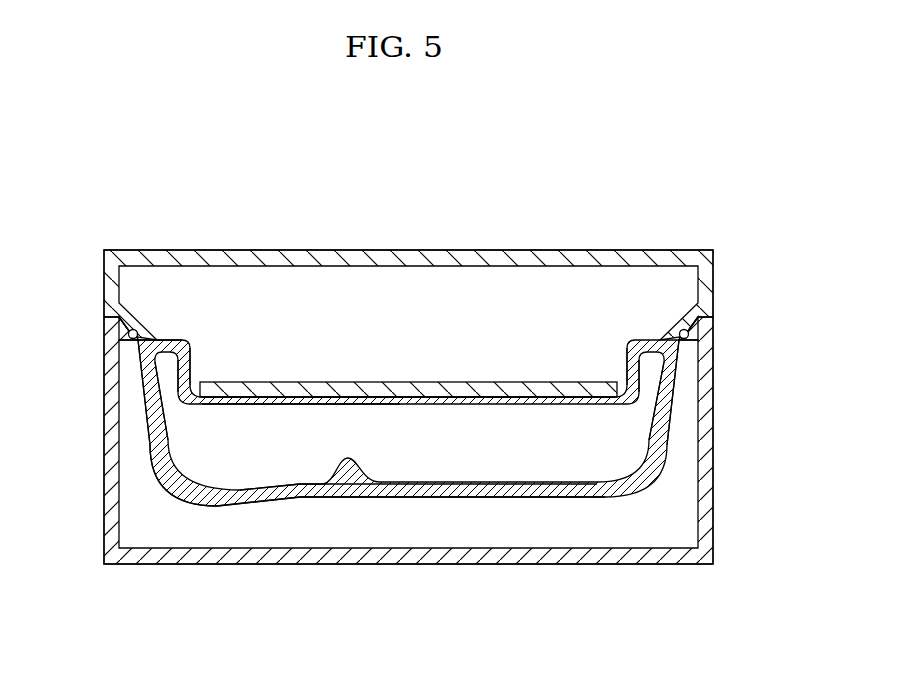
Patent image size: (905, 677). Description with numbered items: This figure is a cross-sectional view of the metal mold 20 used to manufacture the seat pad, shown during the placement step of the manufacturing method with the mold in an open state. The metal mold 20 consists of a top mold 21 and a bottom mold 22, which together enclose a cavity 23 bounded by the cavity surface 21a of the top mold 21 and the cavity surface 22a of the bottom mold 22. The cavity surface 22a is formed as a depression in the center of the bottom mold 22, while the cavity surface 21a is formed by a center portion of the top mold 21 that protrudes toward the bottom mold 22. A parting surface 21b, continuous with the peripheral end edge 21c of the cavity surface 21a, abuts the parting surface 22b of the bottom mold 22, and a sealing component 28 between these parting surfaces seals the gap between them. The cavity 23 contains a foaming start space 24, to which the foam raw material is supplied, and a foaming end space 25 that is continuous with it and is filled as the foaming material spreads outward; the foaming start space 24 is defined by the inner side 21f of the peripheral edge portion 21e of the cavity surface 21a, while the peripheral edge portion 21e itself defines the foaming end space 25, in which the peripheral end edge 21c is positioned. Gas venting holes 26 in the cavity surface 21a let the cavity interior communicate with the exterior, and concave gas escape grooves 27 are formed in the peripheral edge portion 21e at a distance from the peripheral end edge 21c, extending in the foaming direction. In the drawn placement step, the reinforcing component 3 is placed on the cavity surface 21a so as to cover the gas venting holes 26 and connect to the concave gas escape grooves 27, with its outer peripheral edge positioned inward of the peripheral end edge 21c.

The metal mold 20 is at (678, 155).
The top mold 21 is at (707, 284).
The bottom mold 22 is at (707, 372).
The parting surface 22b is at (148, 338).
The sealing component 28 is at (128, 333).
The cavity surface 21a is at (358, 397).
The reinforcing component 3 is at (457, 384).
The concave gas escape groove 27 is at (178, 340).
The foaming end space 25 is at (175, 364).
The gas venting hole 26 is at (205, 386).
The parting surface 21b is at (150, 352).
The peripheral end edge 21c is at (152, 365).
The peripheral edge portion 21e is at (152, 440).
The inner side 21f is at (296, 404).
The cavity surface 22a is at (455, 482).
The cavity 23 is at (240, 462).
The foaming start space 24 is at (521, 448).